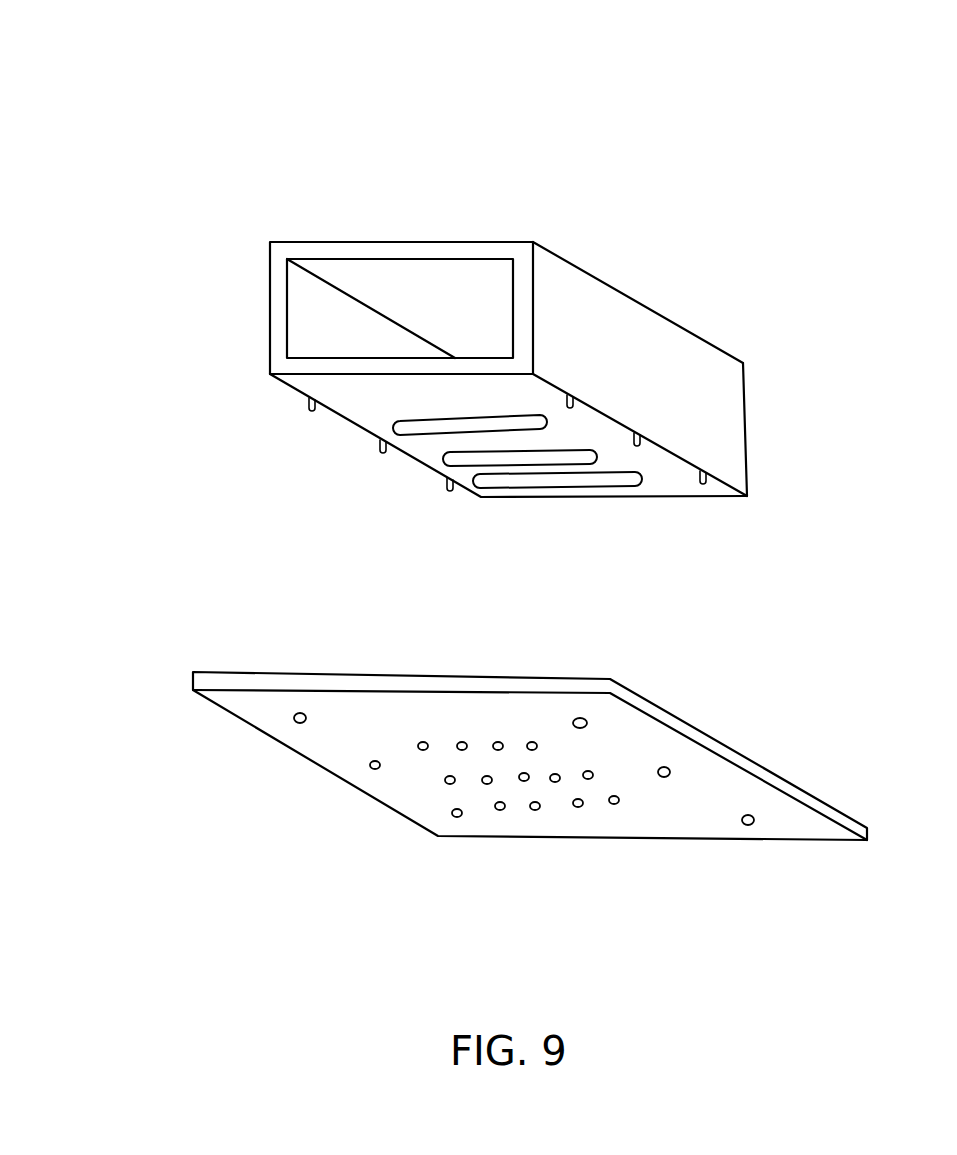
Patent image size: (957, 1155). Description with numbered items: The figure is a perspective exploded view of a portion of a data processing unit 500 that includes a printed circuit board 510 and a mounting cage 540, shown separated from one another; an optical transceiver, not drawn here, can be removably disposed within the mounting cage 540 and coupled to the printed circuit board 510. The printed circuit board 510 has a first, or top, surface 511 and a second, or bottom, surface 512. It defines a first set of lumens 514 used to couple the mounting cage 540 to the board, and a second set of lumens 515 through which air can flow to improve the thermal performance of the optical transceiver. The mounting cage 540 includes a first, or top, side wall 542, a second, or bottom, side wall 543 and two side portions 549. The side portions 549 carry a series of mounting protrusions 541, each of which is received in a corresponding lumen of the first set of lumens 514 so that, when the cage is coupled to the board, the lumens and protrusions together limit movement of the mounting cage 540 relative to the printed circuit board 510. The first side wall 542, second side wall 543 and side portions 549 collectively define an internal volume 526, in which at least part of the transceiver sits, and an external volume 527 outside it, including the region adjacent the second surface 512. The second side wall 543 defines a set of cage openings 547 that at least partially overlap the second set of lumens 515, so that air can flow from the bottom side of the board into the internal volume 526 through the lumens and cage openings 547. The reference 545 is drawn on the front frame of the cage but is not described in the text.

The data processing unit 500 is at (250, 80).
The printed circuit board 510 is at (193, 686).
The first surface 511 is at (248, 672).
The second surface 512 is at (228, 698).
The first set of lumens 514 is at (350, 800).
The second set of lumens 515 is at (520, 788).
The internal volume 526 is at (452, 328).
The external volume 527 is at (688, 910).
The mounting cage 540 is at (590, 270).
The mounting protrusions 541 is at (306, 408).
The first side wall 542 is at (637, 295).
The second side wall 543 is at (347, 392).
The front frame 545 is at (340, 277).
The cage openings 547 is at (400, 430).
The side portions 549 is at (693, 372).